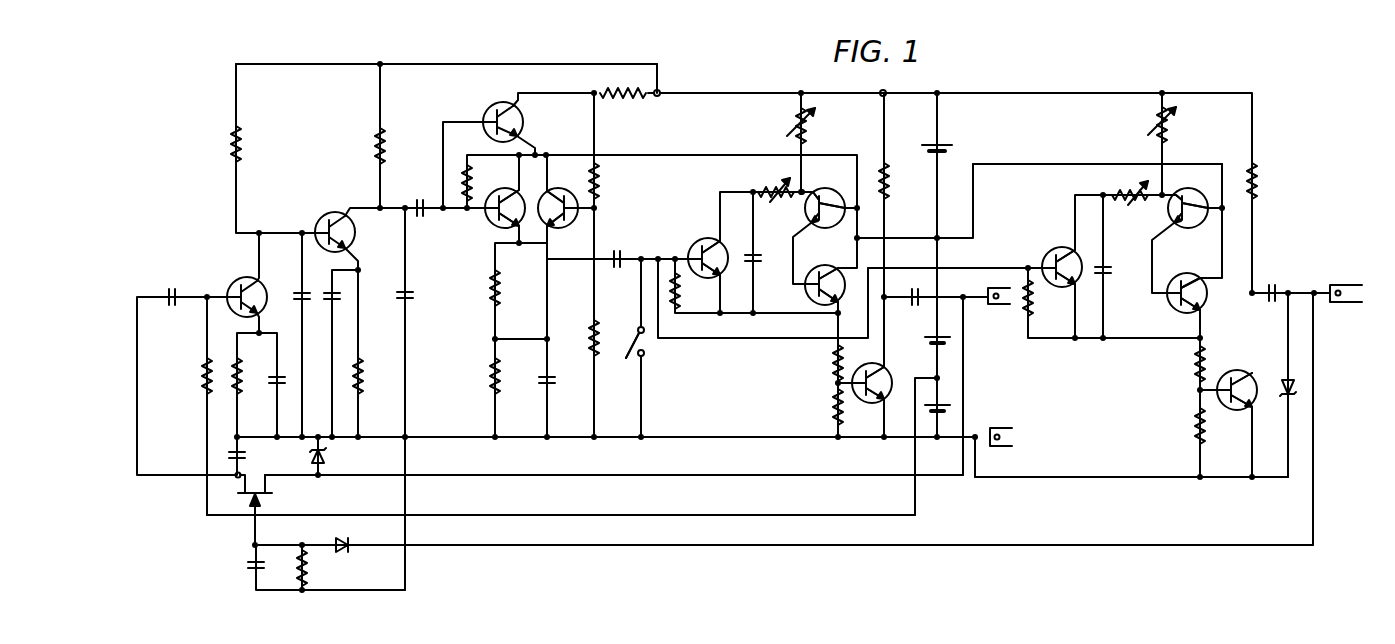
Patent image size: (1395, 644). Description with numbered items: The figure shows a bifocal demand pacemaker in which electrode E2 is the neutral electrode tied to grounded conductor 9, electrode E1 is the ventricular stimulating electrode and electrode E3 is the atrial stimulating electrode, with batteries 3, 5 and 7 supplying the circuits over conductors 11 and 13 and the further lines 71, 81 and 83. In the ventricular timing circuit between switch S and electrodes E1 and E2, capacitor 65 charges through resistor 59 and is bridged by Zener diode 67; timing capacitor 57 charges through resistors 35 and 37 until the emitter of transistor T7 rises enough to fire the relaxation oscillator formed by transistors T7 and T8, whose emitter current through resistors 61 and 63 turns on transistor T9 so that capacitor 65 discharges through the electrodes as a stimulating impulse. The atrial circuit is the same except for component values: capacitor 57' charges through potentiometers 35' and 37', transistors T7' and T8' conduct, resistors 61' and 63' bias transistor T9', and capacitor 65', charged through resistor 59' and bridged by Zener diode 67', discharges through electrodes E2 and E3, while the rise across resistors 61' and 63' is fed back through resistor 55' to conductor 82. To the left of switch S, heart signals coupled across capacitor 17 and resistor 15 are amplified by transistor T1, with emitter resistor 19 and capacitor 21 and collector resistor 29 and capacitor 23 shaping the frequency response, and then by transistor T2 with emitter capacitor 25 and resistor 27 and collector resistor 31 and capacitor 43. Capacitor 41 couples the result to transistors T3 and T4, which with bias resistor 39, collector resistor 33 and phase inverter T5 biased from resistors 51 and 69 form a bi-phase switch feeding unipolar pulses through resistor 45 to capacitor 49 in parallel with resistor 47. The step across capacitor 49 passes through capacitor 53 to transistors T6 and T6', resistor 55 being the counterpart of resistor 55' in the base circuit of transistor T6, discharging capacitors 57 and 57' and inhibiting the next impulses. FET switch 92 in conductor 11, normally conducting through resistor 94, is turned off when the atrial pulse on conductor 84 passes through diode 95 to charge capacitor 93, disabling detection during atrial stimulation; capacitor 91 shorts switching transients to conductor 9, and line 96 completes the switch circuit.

The battery 3 is at (950, 405).
The battery 5 is at (928, 338).
The battery 7 is at (930, 146).
The conductor 9 is at (725, 437).
The conductor 11 is at (725, 475).
The conductor 13 is at (728, 515).
The resistor 15 is at (201, 377).
The capacitor 17 is at (172, 285).
The resistor 19 is at (242, 372).
The capacitor 21 is at (271, 386).
The capacitor 23 is at (298, 290).
The capacitor 25 is at (330, 290).
The resistor 27 is at (364, 374).
The resistor 29 is at (245, 140).
The resistor 31 is at (386, 140).
The resistor 33 is at (624, 99).
The resistor 35 is at (783, 121).
The resistor 37 is at (766, 179).
The bias resistor 39 is at (462, 170).
The capacitor 41 is at (420, 218).
The capacitor 43 is at (413, 294).
The resistor 45 is at (490, 290).
The resistor 47 is at (488, 376).
The capacitor 49 is at (540, 382).
The resistor 51 is at (590, 338).
The capacitor 53 is at (622, 250).
The resistor 55 is at (692, 294).
The capacitor 57 is at (766, 279).
The resistor 59 is at (901, 181).
The resistor 61 is at (815, 363).
The resistor 63 is at (815, 407).
The capacitor 65 is at (900, 312).
The Zener diode 67 is at (341, 460).
The resistor 69 is at (602, 180).
The supply line 71 is at (528, 60).
The line 81 is at (978, 168).
The conductor 82 is at (1010, 266).
The line 83 is at (1038, 480).
The conductor 84 is at (925, 545).
The capacitor 91 is at (228, 455).
The FET switch 92 is at (268, 490).
The capacitor 93 is at (250, 570).
The resistor 94 is at (310, 570).
The diode 95 is at (348, 550).
The line 96 is at (405, 565).
The potentiometer 35' is at (1143, 120).
The potentiometer 37' is at (1117, 185).
The resistor 55' is at (1048, 308).
The capacitor 57' is at (1121, 285).
The resistor 59' is at (1273, 181).
The resistor 61' is at (1171, 366).
The resistor 63' is at (1173, 426).
The capacitor 65' is at (1281, 275).
The Zener diode 67' is at (1319, 395).
The transistor T1 is at (240, 280).
The transistor T2 is at (327, 214).
The transistor T3 is at (492, 104).
The transistor T4 is at (510, 190).
The phase inverter transistor T5 is at (575, 190).
The transistor T6 is at (691, 244).
The transistor T7 is at (804, 212).
The transistor T8 is at (817, 268).
The transistor T9 is at (868, 397).
The transistor T6' is at (1051, 254).
The transistor T7' is at (1167, 212).
The transistor T8' is at (1204, 302).
The transistor T9' is at (1232, 410).
The switch S is at (634, 362).
The ventricular stimulating electrode E1 is at (1004, 308).
The neutral electrode E2 is at (1000, 446).
The atrial stimulating electrode E3 is at (1340, 284).